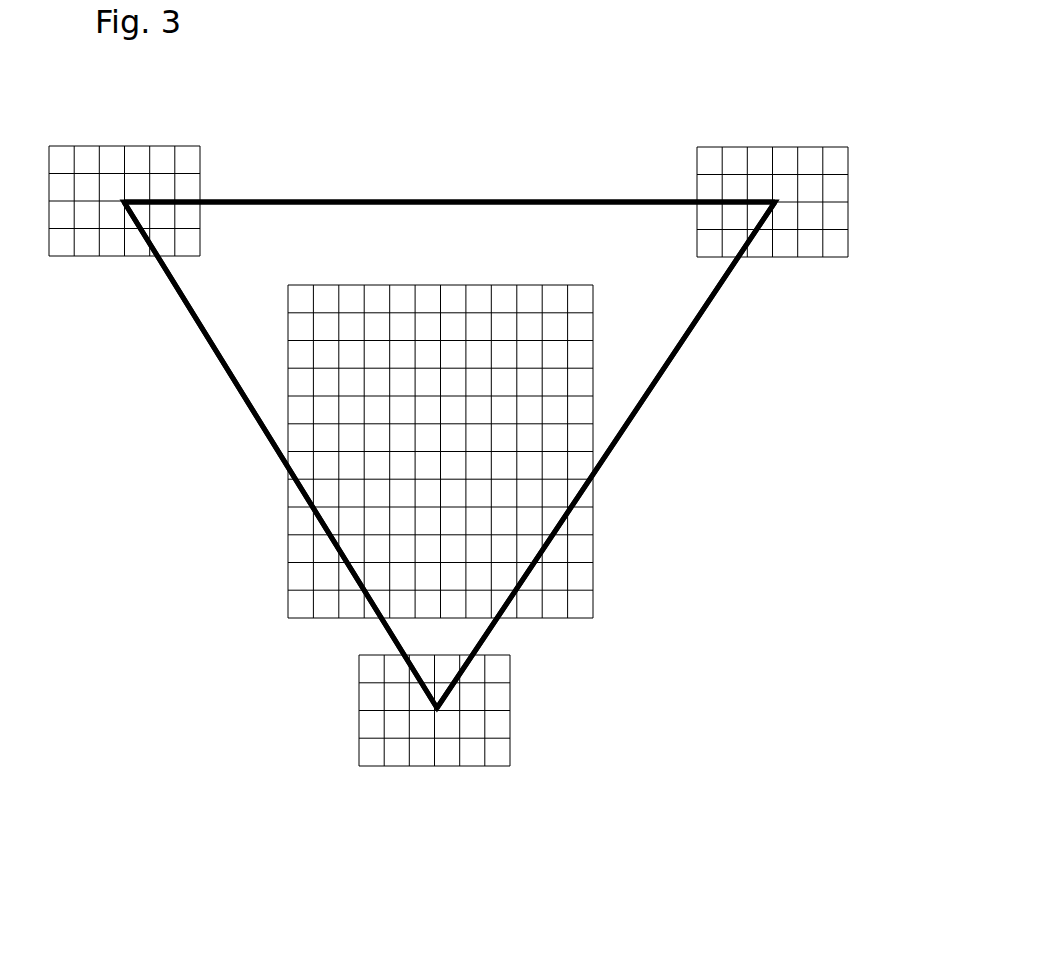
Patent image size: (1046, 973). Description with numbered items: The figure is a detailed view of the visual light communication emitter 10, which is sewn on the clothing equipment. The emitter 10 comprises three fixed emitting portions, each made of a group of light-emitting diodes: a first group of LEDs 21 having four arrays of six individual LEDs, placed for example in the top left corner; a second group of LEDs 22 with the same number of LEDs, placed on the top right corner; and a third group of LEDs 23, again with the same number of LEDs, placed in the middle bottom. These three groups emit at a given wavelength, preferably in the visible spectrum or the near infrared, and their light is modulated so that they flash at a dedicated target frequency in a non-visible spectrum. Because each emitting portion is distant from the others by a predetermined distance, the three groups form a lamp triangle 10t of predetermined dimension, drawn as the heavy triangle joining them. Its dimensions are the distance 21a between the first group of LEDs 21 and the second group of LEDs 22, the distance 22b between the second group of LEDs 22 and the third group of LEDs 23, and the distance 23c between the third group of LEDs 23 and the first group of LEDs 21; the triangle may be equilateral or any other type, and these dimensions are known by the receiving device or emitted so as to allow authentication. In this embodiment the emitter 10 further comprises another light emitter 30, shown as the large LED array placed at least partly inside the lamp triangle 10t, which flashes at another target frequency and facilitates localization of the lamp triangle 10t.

The visual light communication emitter 10 is at (451, 453).
The lamp triangle 10t is at (714, 349).
The first group of LEDs 21 is at (117, 176).
The distance between the first group of LEDs and the second group of LEDs 21a is at (449, 149).
The second group of LEDs 22 is at (724, 156).
The distance between the second group of LEDs and the third group of LEDs 22b is at (670, 363).
The third group of LEDs 23 is at (370, 764).
The distance between the third group of LEDs and the first group of LEDs 23c is at (263, 455).
The other light emitter 30 is at (440, 325).